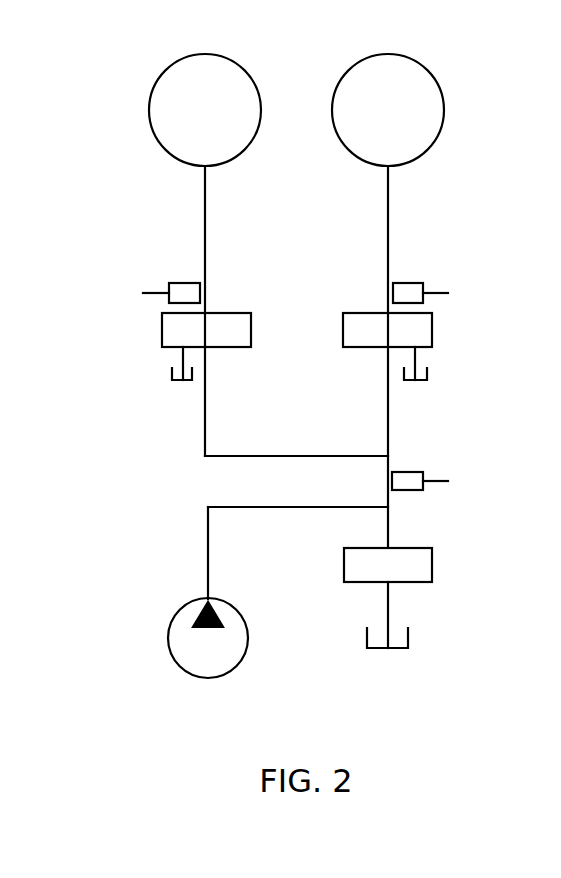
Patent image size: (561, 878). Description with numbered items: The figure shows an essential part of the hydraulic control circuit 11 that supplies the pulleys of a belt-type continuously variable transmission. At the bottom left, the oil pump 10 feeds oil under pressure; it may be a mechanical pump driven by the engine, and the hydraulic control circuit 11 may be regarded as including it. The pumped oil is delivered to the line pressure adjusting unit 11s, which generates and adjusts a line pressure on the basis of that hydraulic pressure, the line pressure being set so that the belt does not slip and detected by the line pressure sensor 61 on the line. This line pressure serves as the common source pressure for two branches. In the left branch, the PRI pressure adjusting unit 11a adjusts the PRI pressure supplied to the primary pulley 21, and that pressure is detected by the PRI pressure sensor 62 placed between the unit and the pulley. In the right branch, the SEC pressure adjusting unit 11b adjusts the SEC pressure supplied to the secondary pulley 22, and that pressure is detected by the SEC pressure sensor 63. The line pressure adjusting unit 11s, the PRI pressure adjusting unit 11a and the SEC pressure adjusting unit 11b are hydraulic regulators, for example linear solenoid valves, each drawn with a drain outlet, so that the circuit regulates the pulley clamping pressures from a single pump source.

The hydraulic control circuit 11 is at (96, 166).
The primary pulley 21 is at (196, 56).
The secondary pulley 22 is at (378, 56).
The PRI pressure sensor 62 is at (186, 283).
The SEC pressure sensor 63 is at (405, 283).
The line pressure sensor 61 is at (405, 472).
The PRI pressure adjusting unit 11a is at (162, 330).
The SEC pressure adjusting unit 11b is at (432, 329).
The line pressure adjusting unit 11s is at (432, 565).
The oil pump 10 is at (179, 611).